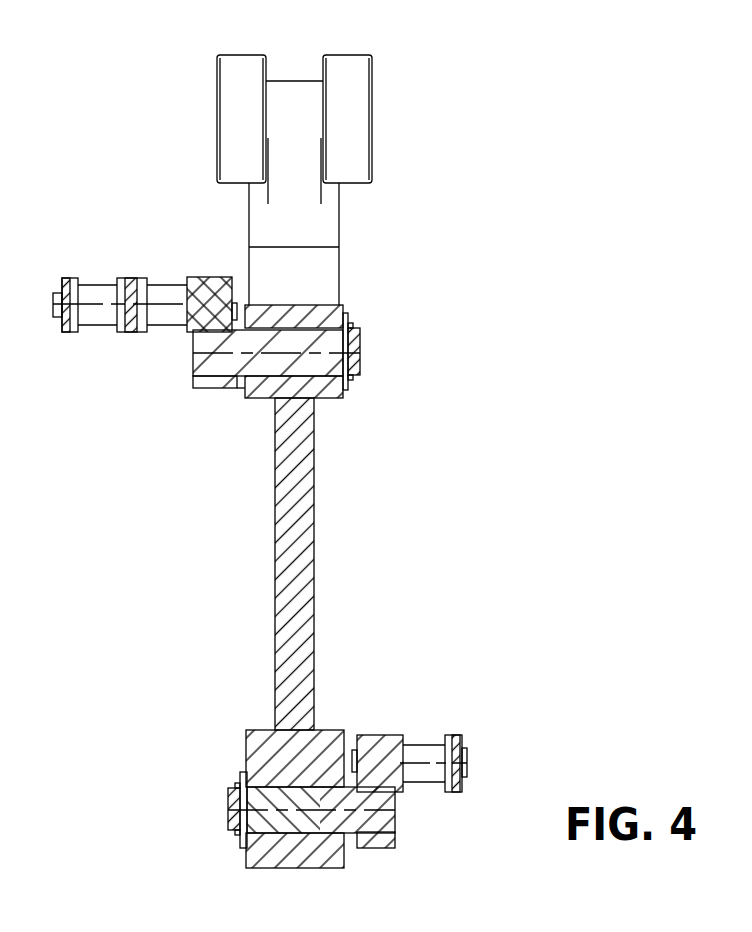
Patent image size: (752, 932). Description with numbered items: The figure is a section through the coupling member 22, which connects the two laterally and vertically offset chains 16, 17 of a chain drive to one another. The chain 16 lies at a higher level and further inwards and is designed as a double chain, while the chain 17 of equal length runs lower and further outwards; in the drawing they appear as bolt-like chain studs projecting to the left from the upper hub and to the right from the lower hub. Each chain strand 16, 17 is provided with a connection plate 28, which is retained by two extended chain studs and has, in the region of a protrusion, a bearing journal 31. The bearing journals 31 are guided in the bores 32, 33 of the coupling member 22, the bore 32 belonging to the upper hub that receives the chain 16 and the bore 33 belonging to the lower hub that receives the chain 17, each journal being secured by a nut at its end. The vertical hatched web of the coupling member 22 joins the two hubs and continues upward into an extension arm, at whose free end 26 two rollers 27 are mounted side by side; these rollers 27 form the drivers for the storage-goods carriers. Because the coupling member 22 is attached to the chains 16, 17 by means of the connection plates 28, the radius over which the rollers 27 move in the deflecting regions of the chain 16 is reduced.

The chain 16 is at (97, 317).
The chain 17 is at (418, 752).
The coupling member 22 is at (314, 522).
The free end 26 is at (288, 113).
The roller 27 is at (235, 123).
The connection plate 28 is at (212, 290).
The bearing journal 31 is at (357, 353).
The bore 32 is at (288, 330).
The bore 33 is at (273, 787).